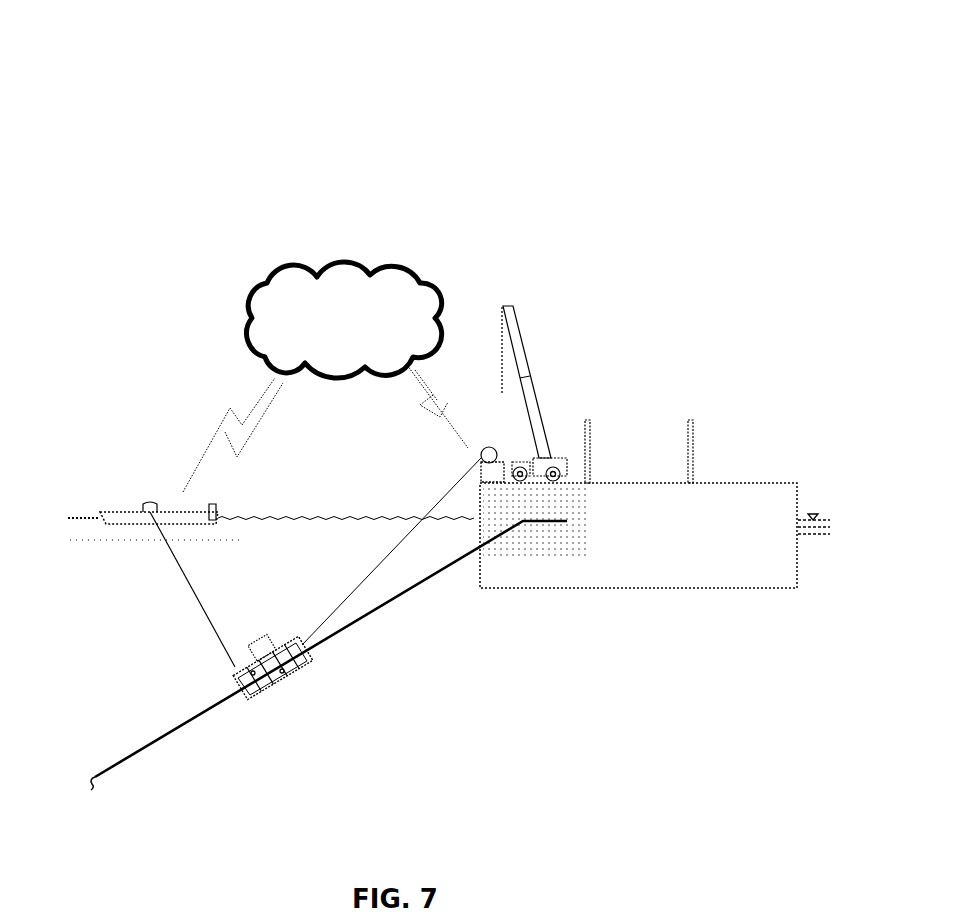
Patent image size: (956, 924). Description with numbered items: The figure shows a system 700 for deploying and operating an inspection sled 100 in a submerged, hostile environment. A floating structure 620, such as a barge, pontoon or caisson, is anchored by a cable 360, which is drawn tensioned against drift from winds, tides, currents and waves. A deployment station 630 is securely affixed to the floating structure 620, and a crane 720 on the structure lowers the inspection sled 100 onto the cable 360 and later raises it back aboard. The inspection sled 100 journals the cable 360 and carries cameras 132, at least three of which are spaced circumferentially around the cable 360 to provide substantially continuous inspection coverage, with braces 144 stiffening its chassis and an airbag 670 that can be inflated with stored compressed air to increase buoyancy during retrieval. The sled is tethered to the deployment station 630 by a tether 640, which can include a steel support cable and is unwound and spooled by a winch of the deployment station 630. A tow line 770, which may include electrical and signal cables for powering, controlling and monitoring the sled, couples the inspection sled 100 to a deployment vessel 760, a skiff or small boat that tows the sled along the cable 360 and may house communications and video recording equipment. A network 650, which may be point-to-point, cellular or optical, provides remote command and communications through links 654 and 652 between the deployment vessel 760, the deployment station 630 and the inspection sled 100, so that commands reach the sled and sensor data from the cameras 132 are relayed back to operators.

The system 700 is at (650, 110).
The network 650 is at (405, 272).
The link 654 is at (270, 441).
The link 652 is at (419, 436).
The deployment vessel 760 is at (115, 467).
The tow line 770 is at (193, 597).
The floating structure 620 is at (690, 596).
The cable 360 is at (116, 751).
The crane 720 is at (551, 407).
The deployment station 630 is at (487, 447).
The tether 640 is at (334, 590).
The inspection sled 100 is at (306, 700).
The cameras 132 is at (258, 649).
The braces 144 is at (313, 654).
The airbag 670 is at (272, 629).